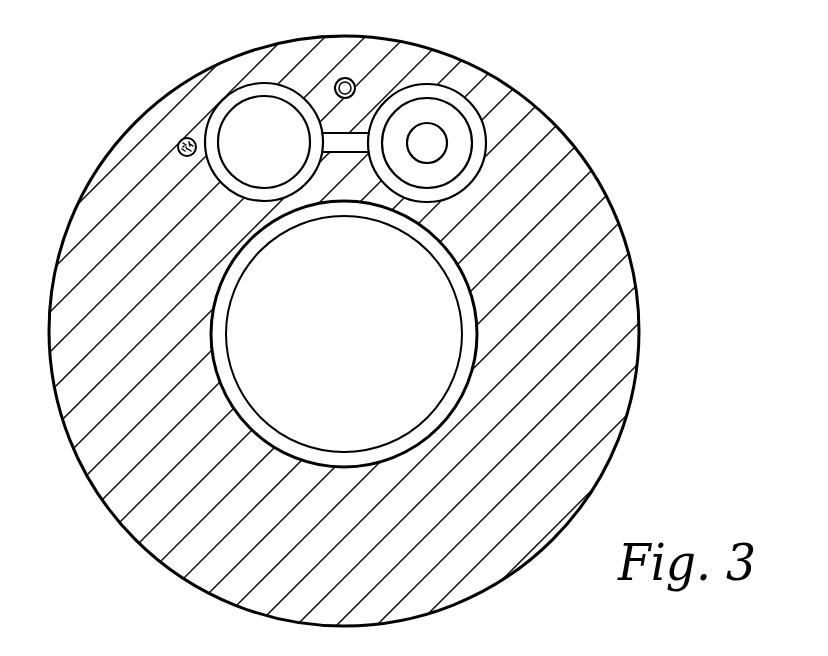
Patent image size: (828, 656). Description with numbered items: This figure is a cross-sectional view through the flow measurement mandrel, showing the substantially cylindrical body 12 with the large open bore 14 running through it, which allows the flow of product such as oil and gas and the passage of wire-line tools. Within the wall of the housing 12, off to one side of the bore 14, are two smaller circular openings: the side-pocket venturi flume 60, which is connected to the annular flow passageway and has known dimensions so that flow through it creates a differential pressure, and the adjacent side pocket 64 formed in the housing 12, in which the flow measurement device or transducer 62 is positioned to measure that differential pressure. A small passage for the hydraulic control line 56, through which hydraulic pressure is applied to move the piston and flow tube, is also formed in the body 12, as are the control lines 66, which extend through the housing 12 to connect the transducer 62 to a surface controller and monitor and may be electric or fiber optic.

The cylindrical body 12 is at (580, 203).
The open bore 14 is at (413, 355).
The hydraulic control line 56 is at (338, 80).
The venturi flume 60 is at (232, 110).
The transducer 62 is at (457, 95).
The side pocket 64 is at (477, 148).
The control lines 66 is at (178, 145).